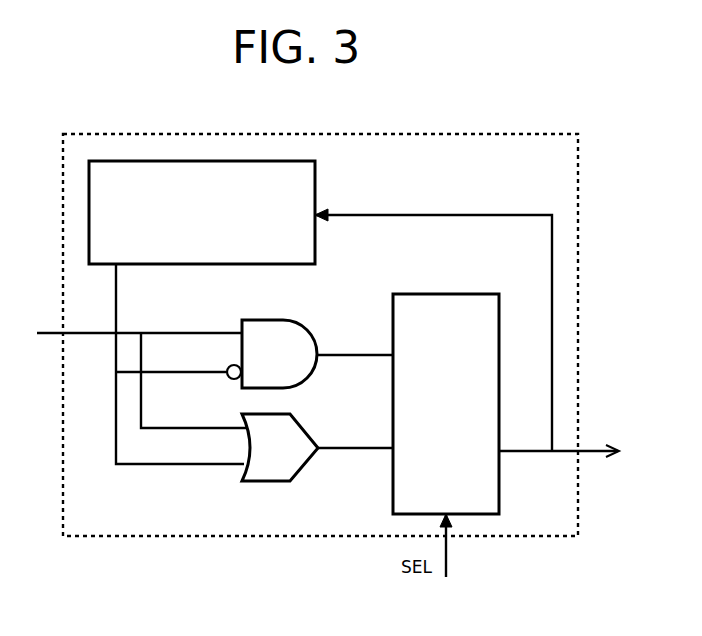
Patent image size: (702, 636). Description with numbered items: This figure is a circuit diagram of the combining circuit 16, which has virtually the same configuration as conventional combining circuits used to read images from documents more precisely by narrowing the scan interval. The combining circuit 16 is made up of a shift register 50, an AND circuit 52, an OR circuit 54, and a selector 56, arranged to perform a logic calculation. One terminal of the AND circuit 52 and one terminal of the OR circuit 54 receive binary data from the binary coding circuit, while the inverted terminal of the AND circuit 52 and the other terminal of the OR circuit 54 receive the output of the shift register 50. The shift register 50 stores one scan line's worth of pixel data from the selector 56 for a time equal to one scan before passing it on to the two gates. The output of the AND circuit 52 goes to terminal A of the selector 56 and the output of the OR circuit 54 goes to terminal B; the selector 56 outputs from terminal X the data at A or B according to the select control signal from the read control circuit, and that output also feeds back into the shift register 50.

The combining circuit 16 is at (519, 137).
The shift register 50 is at (315, 178).
The AND circuit 52 is at (304, 322).
The OR circuit 54 is at (308, 430).
The selector 56 is at (483, 294).